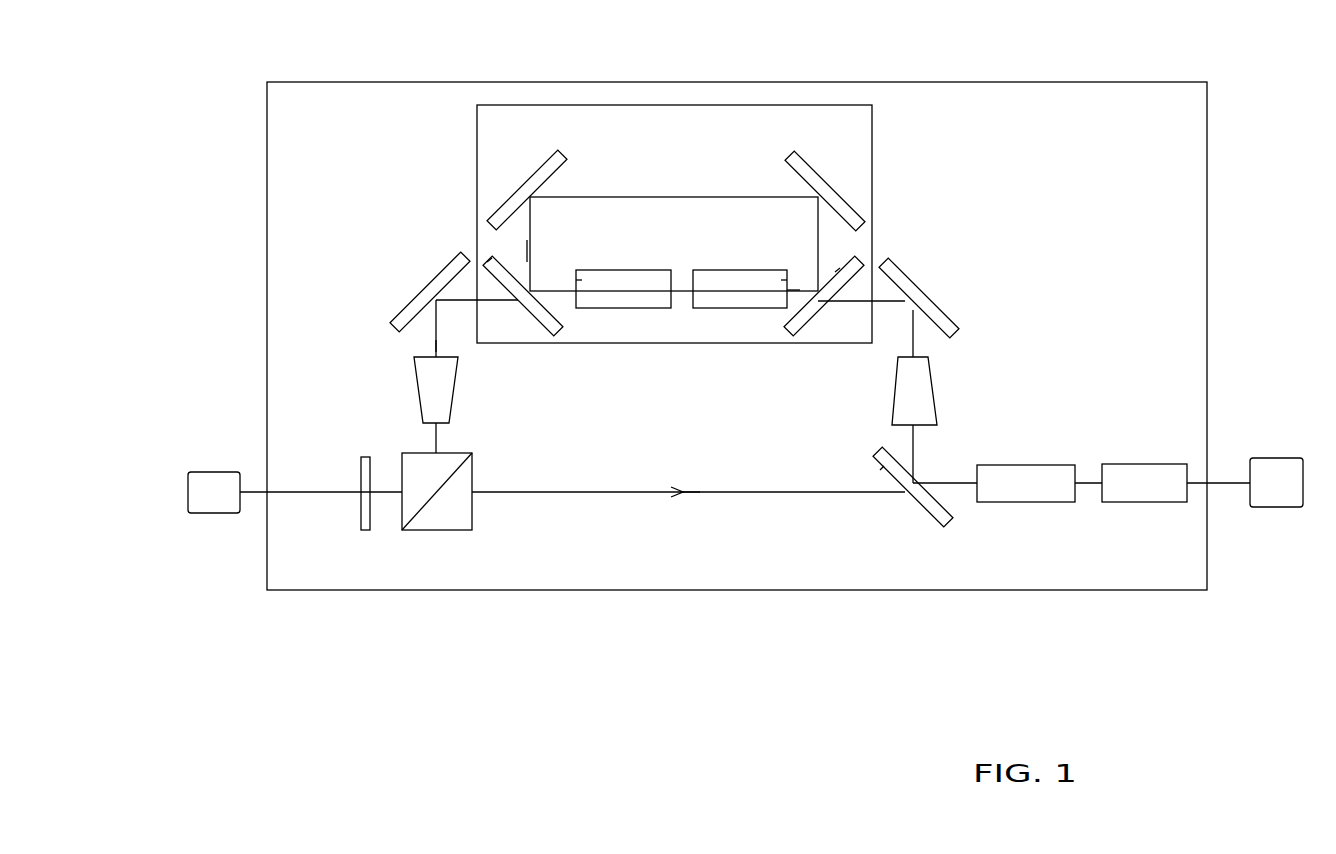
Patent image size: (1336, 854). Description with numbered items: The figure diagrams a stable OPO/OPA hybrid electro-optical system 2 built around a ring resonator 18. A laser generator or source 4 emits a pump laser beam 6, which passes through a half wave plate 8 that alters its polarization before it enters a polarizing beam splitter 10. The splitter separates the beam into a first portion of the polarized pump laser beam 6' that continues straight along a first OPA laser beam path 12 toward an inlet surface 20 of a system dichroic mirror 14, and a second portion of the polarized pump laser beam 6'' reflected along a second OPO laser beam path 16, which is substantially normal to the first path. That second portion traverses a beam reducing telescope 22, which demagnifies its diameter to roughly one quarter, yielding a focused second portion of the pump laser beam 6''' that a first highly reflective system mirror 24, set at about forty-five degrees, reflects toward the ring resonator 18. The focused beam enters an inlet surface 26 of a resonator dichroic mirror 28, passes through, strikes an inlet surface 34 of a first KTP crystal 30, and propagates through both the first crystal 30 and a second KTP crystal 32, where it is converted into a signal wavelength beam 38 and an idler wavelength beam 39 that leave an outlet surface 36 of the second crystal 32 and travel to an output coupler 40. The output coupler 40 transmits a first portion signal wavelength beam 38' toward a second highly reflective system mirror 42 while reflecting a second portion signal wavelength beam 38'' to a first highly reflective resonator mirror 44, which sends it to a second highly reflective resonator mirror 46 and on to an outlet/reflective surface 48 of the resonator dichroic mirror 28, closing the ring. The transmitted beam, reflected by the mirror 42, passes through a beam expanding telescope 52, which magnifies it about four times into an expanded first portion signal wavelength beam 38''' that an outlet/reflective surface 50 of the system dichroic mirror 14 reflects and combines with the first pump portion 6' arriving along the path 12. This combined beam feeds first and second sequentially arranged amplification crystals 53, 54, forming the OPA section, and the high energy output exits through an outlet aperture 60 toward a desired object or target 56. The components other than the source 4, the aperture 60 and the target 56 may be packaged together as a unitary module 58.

The stable OPO/OPA electro-optical system 2 is at (1219, 58).
The laser generator or source 4 is at (212, 476).
The pump laser beam 6 is at (313, 434).
The first portion of the polarized pump laser beam 6' is at (688, 462).
The second portion of the polarized pump laser beam 6'' is at (482, 447).
The focused second portion of the pump laser beam 6''' is at (298, 346).
The half wave plate 8 is at (370, 515).
The polarizing beam splitter 10 is at (445, 522).
The first OPA laser beam path 12 is at (672, 497).
The system dichroic mirror 14 is at (928, 510).
The second OPO laser beam path 16 is at (437, 337).
The ring resonator 18 is at (613, 105).
The inlet surface 20 is at (878, 473).
The beam reducing telescope 22 is at (443, 386).
The first highly reflective system mirror 24 is at (410, 302).
The inlet surface 26 is at (494, 318).
The resonator dichroic mirror 28 is at (560, 328).
The first KTP crystal 30 is at (662, 300).
The second KTP crystal 32 is at (722, 300).
The inlet surface 34 is at (577, 280).
The outlet surface 36 is at (788, 280).
The signal wavelength beam 38 is at (968, 242).
The idler wavelength beam 39 is at (800, 278).
The first portion signal wavelength beam 38' is at (991, 322).
The second portion signal wavelength beam 38'' is at (674, 164).
The expanded first portion signal wavelength beam 38''' is at (976, 454).
The output coupler 40 is at (832, 272).
The second highly reflective system mirror 42 is at (935, 284).
The first highly reflective resonator mirror 44 is at (862, 198).
The second highly reflective resonator mirror 46 is at (538, 180).
The outlet/reflective surface 48 is at (524, 262).
The outlet/reflective surface 50 is at (947, 497).
The beam expanding telescope 52 is at (903, 393).
The first amplification crystal 53 is at (1013, 495).
The second amplification crystal 54 is at (1162, 474).
The target 56 is at (1273, 507).
The unitary module 58 is at (675, 82).
The outlet aperture 60 is at (1216, 476).